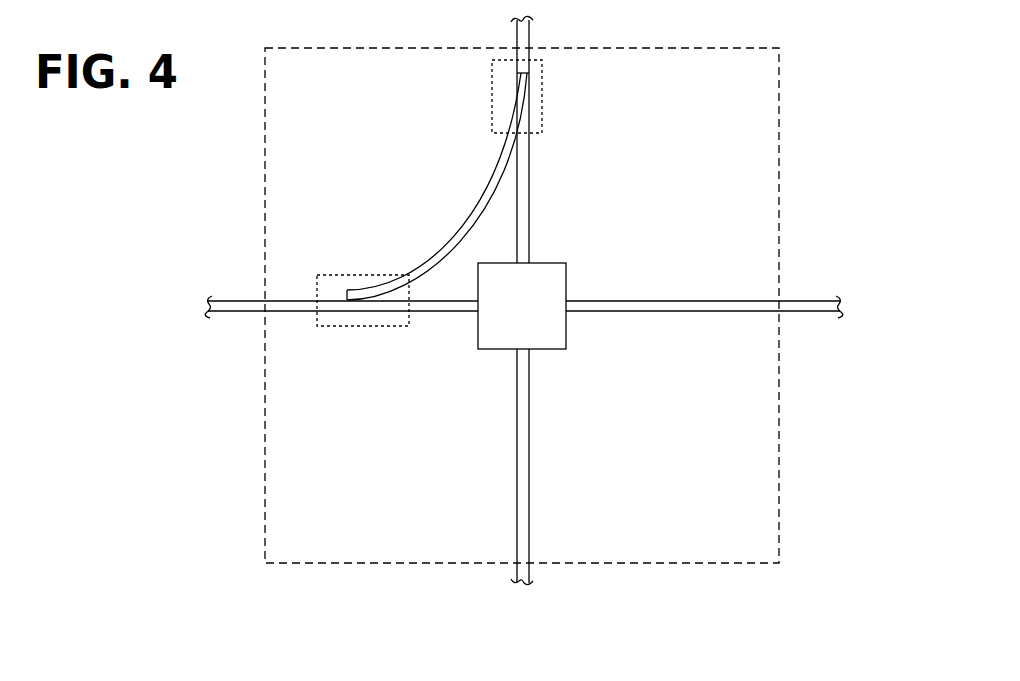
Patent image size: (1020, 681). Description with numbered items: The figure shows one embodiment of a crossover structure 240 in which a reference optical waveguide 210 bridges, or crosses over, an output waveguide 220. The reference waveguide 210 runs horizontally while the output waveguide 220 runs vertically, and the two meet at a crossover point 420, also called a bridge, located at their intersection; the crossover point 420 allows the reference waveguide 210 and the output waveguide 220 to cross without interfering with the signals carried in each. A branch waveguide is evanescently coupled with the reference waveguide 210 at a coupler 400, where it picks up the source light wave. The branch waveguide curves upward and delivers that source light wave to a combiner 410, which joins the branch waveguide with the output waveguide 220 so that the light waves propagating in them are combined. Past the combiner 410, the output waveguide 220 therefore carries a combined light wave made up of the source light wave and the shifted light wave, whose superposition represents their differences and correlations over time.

The reference optical waveguide 210 is at (226, 301).
The output waveguide 220 is at (530, 573).
The crossover structure 240 is at (780, 90).
The coupler 400 is at (343, 275).
The combiner 410 is at (543, 98).
The crossover point 420 is at (540, 263).